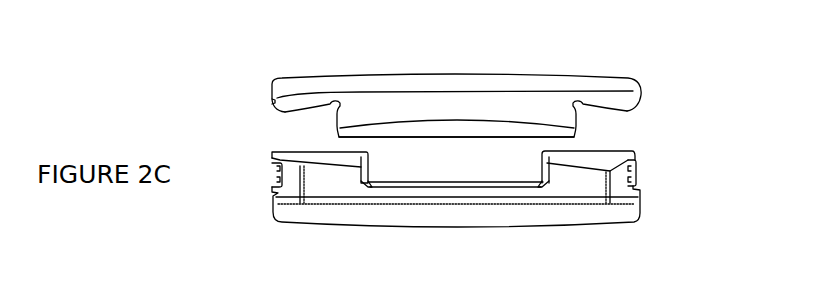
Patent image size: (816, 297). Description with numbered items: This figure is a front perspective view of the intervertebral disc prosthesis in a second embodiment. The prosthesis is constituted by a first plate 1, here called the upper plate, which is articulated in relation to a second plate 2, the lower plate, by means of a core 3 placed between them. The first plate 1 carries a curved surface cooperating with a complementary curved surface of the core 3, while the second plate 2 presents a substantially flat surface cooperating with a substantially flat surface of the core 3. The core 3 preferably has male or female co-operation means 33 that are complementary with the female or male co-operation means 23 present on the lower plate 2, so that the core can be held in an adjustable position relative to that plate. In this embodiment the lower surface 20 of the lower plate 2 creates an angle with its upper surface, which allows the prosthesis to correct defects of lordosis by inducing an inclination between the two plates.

The first plate 1 is at (649, 84).
The second plate 2 is at (491, 200).
The core 3 is at (335, 137).
The lower surface 20 is at (322, 212).
The female or male co-operation means 23 is at (638, 155).
The male or female co-operation means 33 is at (637, 173).